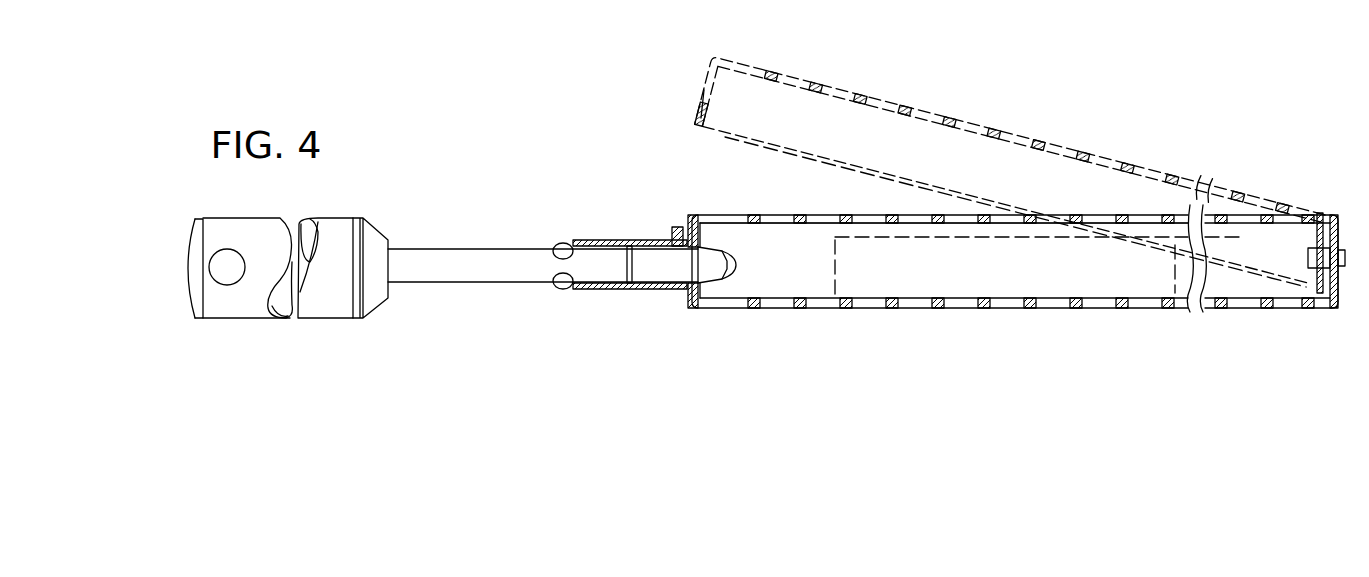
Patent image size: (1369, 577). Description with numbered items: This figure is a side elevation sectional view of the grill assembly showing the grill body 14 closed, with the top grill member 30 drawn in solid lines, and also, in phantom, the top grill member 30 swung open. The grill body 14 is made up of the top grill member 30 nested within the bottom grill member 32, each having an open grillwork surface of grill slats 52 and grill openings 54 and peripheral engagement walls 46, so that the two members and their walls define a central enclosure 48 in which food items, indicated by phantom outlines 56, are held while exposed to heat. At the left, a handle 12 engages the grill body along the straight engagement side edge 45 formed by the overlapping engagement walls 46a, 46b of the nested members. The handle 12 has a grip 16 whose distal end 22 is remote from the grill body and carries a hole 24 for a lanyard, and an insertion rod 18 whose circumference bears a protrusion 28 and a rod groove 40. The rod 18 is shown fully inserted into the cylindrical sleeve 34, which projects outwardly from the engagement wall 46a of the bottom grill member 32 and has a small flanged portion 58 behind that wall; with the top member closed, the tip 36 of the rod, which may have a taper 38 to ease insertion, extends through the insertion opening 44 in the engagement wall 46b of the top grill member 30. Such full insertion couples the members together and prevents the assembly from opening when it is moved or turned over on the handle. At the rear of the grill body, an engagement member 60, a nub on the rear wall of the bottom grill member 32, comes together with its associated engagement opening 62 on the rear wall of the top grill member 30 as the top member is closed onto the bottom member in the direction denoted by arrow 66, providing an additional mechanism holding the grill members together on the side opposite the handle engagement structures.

The handle 12 is at (292, 324).
The grill body 14 is at (1086, 88).
The grip 16 is at (250, 316).
The insertion rod 18 is at (412, 250).
The distal end 22 is at (182, 266).
The hole 24 is at (230, 262).
The protrusion 28 is at (560, 243).
The top grill member 30 is at (988, 116).
The bottom grill member 32 is at (961, 312).
The cylindrical sleeve 34 is at (588, 240).
The tip 36 is at (737, 262).
The taper 38 is at (730, 250).
The rod groove 40 is at (628, 262).
The insertion opening 44 is at (705, 298).
The engagement side edge 45 is at (660, 225).
The engagement wall 46 is at (927, 100).
The engagement wall of bottom grill member 46a is at (692, 300).
The engagement wall of top grill member 46b is at (710, 62).
The central enclosure 48 is at (810, 240).
The grill slat 52 is at (805, 308).
The grill opening 54 is at (736, 306).
The phantom outline 56 is at (828, 262).
The flanged portion 58 is at (680, 227).
The engagement member 60 is at (1310, 258).
The engagement opening 62 is at (1318, 240).
The arrow 66 is at (732, 137).